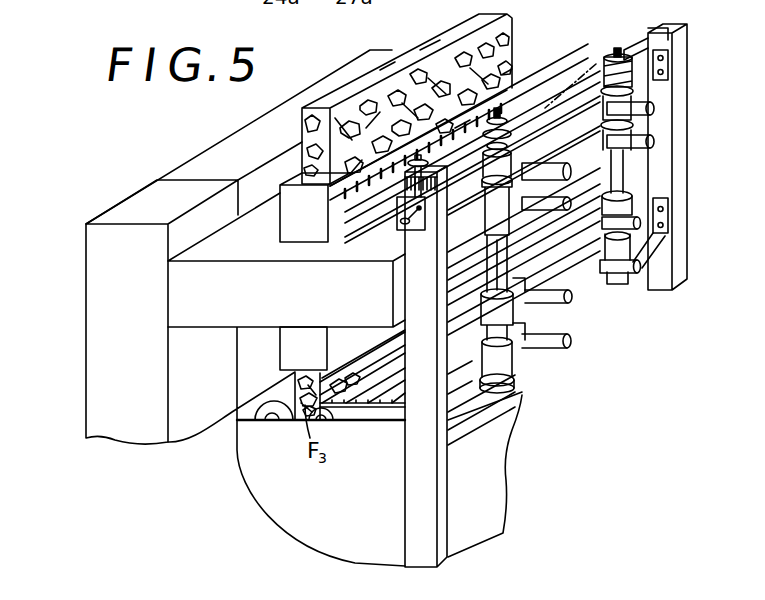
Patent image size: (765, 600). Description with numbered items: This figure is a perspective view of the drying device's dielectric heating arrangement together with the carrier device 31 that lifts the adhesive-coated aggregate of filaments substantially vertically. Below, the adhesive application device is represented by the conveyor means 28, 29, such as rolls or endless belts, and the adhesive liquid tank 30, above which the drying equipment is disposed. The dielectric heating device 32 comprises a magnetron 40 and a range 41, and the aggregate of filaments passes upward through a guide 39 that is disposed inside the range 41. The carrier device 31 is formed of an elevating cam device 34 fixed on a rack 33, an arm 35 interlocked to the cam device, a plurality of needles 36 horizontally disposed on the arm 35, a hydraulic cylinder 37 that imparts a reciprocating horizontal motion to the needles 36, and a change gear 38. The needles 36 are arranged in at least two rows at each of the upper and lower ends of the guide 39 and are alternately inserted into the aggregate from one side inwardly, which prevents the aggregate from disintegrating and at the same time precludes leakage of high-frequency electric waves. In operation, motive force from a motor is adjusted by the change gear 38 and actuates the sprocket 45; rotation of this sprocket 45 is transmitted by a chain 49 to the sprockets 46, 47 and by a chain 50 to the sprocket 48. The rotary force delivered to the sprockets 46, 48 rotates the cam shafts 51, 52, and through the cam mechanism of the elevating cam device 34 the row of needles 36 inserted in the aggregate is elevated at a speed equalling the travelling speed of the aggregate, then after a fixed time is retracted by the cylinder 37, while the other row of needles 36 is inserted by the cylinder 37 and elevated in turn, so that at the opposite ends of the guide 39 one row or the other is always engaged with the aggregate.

The conveyor means 28 is at (292, 402).
The conveyor means 29 is at (373, 378).
The adhesive liquid tank 30 is at (255, 496).
The carrier device 31 is at (578, 70).
The dielectric heating device 32 is at (78, 358).
The rack 33 is at (672, 186).
The elevating cam device 34 is at (628, 283).
The arm 35 is at (547, 240).
The needles 36 is at (365, 333).
The hydraulic cylinder 37 is at (655, 145).
The change gear 38 is at (430, 224).
The guide 39 is at (292, 215).
The magnetron 40 is at (96, 405).
The range 41 is at (202, 314).
The sprocket 45 is at (414, 157).
The sprocket 46 is at (524, 92).
The sprocket 47 is at (528, 110).
The sprocket 48 is at (662, 36).
The chain 49 is at (462, 118).
The chain 50 is at (596, 64).
The cam shaft 51 is at (508, 68).
The cam shaft 52 is at (622, 50).